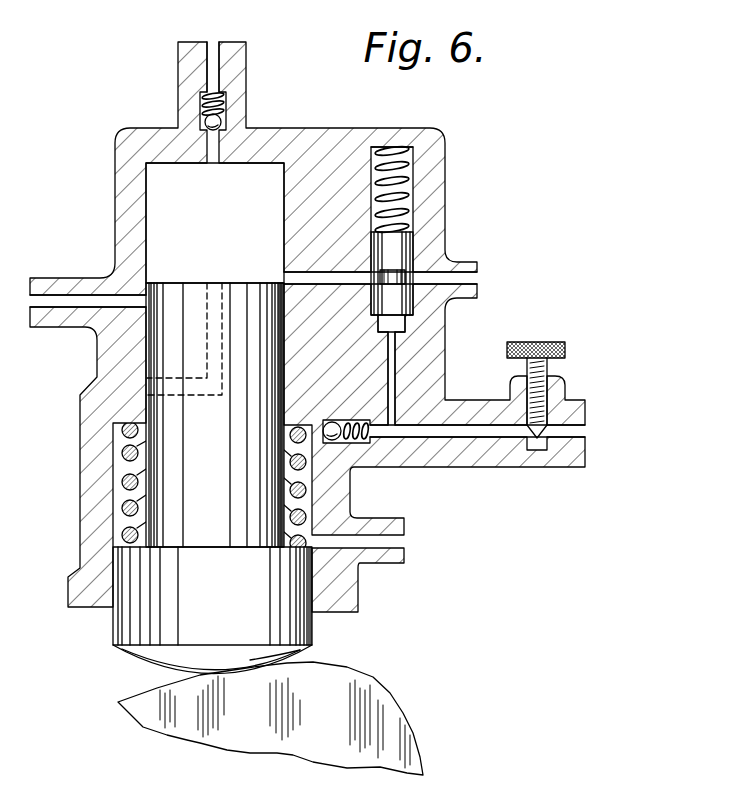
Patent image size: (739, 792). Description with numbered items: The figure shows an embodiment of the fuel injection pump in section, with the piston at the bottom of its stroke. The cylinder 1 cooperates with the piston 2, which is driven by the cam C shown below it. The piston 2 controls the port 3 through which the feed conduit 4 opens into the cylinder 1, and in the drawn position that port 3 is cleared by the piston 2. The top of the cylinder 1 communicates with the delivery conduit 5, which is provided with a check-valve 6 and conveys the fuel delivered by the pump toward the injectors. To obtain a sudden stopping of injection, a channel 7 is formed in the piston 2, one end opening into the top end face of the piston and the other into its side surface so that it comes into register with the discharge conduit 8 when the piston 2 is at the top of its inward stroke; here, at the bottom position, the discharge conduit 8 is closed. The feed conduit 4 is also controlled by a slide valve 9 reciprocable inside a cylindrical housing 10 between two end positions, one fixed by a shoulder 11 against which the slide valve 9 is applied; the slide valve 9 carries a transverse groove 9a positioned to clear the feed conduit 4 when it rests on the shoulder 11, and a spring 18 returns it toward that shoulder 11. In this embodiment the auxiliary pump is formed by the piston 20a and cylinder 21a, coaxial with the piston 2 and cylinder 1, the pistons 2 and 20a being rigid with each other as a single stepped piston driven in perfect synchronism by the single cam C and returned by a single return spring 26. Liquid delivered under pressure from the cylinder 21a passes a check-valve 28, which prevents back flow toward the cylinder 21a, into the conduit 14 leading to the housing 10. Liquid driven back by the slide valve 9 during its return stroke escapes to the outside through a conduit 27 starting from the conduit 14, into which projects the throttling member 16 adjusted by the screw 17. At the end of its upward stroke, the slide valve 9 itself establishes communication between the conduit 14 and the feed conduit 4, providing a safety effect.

The cylinder 1 is at (147, 195).
The piston 2 is at (167, 384).
The port 3 is at (284, 280).
The feed conduit 4 is at (440, 282).
The delivery conduit 5 is at (213, 72).
The check-valve 6 is at (221, 118).
The channel 7 is at (216, 298).
The discharge conduit 8 is at (73, 300).
The slide valve 9 is at (395, 247).
The transverse channel or groove 9a is at (408, 284).
The cylindrical housing 10 is at (412, 191).
The shoulder 11 is at (405, 320).
The conduit 14 is at (397, 378).
The throttling member 16 is at (541, 428).
The screw 17 is at (540, 342).
The spring 18 is at (415, 163).
The piston 20a is at (180, 610).
The cylinder 21a is at (317, 480).
The return spring 26 is at (123, 452).
The conduit 27 is at (492, 438).
The check-valve 28 is at (352, 443).
The cam C is at (340, 707).